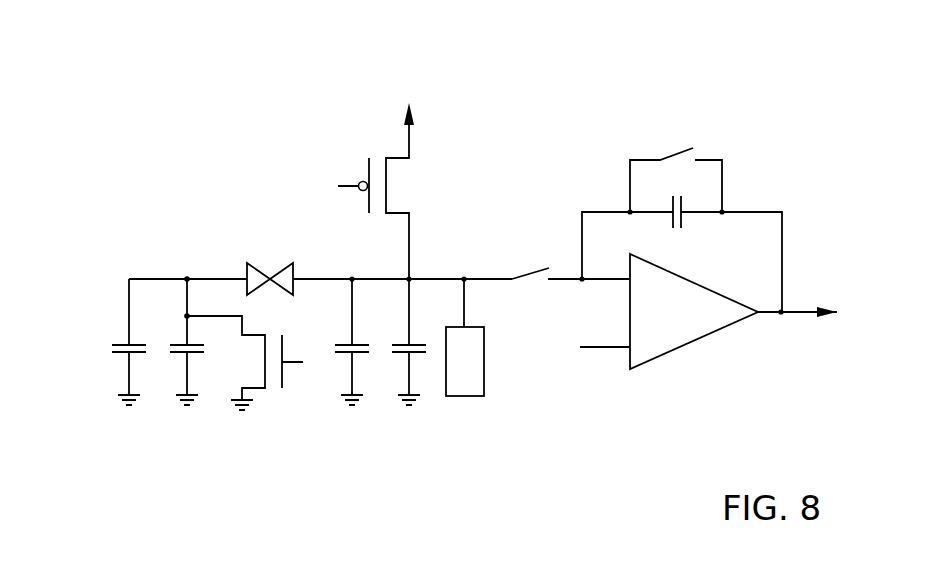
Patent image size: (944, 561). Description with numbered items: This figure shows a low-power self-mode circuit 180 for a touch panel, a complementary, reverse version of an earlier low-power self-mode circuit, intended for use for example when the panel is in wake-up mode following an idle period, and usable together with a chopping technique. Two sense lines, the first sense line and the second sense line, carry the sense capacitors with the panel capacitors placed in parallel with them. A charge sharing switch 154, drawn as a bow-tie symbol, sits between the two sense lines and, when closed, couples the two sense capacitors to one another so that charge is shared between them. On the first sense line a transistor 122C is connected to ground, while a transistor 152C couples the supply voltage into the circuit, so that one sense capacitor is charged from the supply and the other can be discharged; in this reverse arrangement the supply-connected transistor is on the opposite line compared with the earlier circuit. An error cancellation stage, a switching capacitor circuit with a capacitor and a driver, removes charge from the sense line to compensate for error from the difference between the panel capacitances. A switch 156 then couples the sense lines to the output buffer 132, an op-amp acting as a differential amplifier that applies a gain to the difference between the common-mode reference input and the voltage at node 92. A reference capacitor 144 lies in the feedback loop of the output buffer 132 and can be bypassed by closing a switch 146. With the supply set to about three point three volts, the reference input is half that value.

The low-power self-mode circuit 180 is at (733, 90).
The node 92 is at (187, 277).
The charge sharing switch 154 is at (272, 276).
The transistor 122C is at (258, 391).
The transistor 152C is at (399, 157).
The switch 156 is at (538, 266).
The switch 146 is at (673, 153).
The reference capacitor 144 is at (682, 222).
The output buffer 132 is at (712, 337).